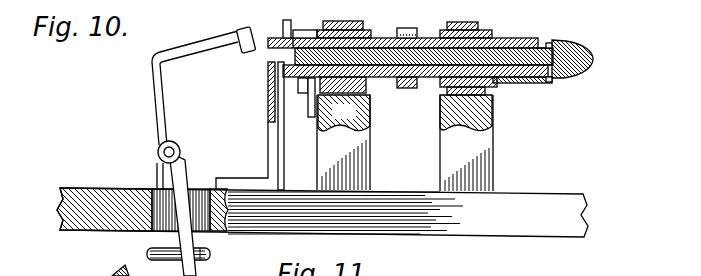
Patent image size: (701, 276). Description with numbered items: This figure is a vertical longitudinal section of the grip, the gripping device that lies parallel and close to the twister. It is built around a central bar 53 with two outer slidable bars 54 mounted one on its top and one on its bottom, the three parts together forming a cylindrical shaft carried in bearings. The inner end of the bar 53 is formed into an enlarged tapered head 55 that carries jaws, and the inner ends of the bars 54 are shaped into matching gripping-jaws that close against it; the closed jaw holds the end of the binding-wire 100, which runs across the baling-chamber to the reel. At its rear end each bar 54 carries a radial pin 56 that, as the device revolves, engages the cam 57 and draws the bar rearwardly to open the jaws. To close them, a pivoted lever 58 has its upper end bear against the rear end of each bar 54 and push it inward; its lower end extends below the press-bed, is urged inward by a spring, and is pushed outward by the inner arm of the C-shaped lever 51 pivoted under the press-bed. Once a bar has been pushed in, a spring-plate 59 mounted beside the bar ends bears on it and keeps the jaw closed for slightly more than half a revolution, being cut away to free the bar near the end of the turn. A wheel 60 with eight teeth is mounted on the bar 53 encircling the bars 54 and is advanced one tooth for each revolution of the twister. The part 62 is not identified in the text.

The C-shaped lever 51 is at (213, 255).
The central bar 53 is at (473, 58).
The slidable bars 54 is at (538, 101).
The enlarged tapered head 55 is at (592, 58).
The radial pin 56 is at (303, 94).
The cam 57 is at (293, 32).
The pivoted lever 58 is at (155, 113).
The spring-plate 59 is at (267, 140).
The wheel 60 is at (412, 26).
The wedge 62 is at (110, 275).
The binding-wire 100 is at (548, 46).